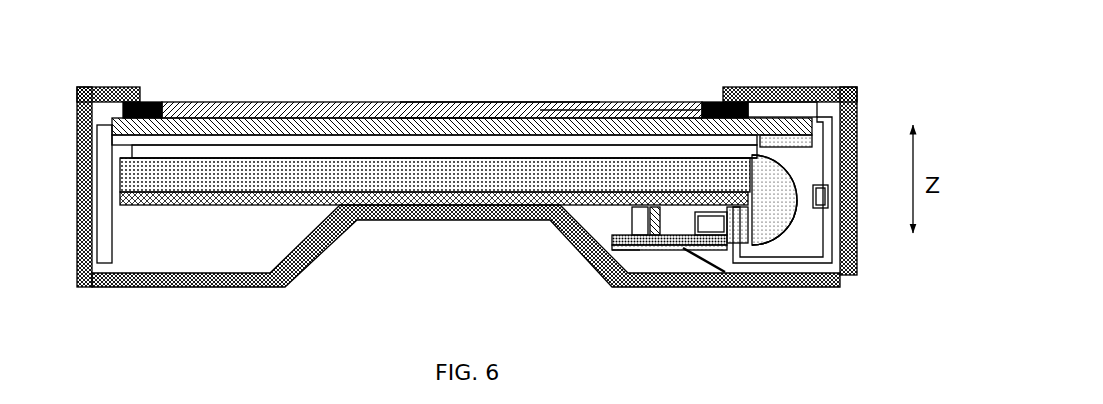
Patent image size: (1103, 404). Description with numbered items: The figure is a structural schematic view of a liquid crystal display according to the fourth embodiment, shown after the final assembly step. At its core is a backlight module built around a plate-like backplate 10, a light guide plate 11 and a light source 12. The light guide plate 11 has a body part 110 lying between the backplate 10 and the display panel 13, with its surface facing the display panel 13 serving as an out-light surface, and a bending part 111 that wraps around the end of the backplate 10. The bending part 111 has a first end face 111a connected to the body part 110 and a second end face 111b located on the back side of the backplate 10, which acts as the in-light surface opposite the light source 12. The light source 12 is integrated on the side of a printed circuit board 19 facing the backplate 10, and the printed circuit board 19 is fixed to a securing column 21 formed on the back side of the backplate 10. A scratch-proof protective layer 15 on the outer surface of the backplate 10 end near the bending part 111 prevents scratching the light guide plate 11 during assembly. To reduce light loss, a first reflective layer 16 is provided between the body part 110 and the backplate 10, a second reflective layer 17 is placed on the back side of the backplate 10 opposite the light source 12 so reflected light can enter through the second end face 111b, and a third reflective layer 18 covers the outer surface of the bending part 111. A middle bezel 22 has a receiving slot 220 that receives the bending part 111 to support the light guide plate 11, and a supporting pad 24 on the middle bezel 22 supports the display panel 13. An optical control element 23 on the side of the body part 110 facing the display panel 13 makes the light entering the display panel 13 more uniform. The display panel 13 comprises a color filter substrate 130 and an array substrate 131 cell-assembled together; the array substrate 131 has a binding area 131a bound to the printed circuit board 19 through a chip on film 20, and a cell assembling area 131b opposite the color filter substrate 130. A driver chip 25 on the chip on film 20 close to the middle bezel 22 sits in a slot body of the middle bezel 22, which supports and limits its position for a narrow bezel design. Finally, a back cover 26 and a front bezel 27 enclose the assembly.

The backplate 10 is at (184, 206).
The light guide plate 11 is at (267, 151).
The light source 12 is at (700, 235).
The display panel 13 is at (430, 43).
The color filter substrate 130 is at (520, 101).
The array substrate 131 is at (447, 112).
The binding area 131a is at (763, 87).
The cell assembling area 131b is at (580, 114).
The scratch-proof protective layer 15 is at (752, 243).
The first reflective layer 16 is at (312, 183).
The second reflective layer 17 is at (668, 250).
The third reflective layer 18 is at (795, 170).
The printed circuit board 19 is at (623, 254).
The chip on film 20 is at (816, 104).
The securing column 21 is at (625, 218).
The middle bezel 22 is at (808, 265).
The optical control element 23 is at (201, 136).
The supporting pad 24 is at (806, 135).
The driver chip 25 is at (830, 197).
The back cover 26 is at (383, 222).
The front bezel 27 is at (851, 86).
The body part 110 is at (370, 178).
The bending part 111 is at (792, 214).
The first end face 111a is at (722, 160).
The second end face 111b is at (733, 250).
The receiving slot 220 is at (785, 232).